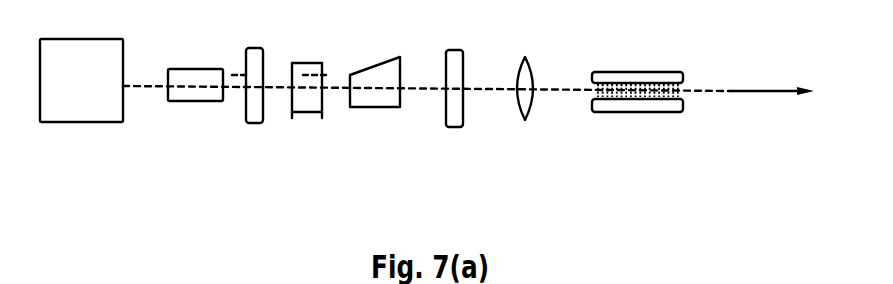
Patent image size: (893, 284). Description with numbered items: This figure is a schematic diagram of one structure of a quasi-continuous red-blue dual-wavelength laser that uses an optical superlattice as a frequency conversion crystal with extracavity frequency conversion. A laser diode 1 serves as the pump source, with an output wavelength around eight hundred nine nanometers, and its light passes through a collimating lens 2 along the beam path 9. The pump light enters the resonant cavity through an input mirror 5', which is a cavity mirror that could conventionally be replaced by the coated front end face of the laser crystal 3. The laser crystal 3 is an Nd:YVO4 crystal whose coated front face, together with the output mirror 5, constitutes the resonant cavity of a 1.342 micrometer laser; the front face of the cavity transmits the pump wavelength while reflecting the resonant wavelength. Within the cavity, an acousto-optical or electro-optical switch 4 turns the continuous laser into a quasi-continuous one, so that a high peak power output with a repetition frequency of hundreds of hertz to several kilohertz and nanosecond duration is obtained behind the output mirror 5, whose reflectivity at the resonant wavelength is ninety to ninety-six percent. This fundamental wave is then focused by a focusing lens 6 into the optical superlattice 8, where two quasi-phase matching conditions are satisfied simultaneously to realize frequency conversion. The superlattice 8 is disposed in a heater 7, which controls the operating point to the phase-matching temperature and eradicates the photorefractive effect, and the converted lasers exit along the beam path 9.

The laser diode 1 is at (81, 66).
The collimating lens 2 is at (195, 58).
The input mirror 5' is at (257, 69).
The laser crystal 3 is at (307, 66).
The acousto-optical or electro-optical switch 4 is at (375, 61).
The output mirror 5 is at (454, 72).
The focusing lens 6 is at (524, 68).
The heater 7 is at (637, 64).
The optical superlattice 8 is at (640, 100).
The beam path 9 is at (773, 56).